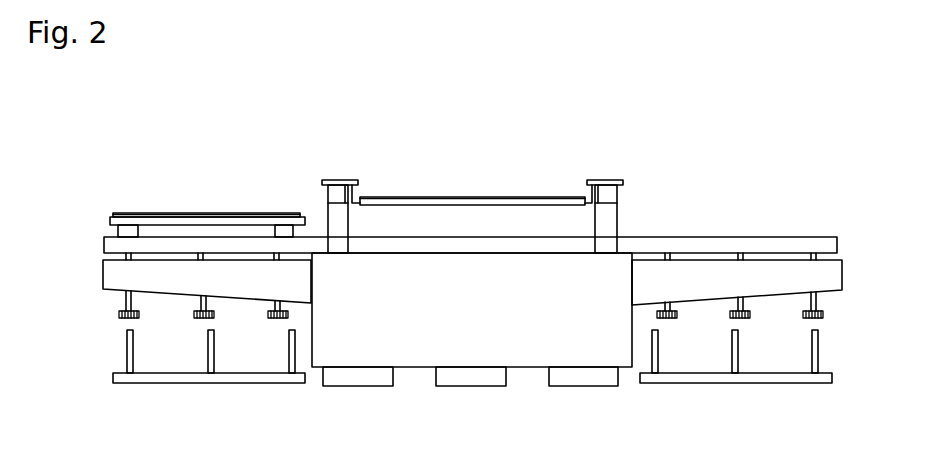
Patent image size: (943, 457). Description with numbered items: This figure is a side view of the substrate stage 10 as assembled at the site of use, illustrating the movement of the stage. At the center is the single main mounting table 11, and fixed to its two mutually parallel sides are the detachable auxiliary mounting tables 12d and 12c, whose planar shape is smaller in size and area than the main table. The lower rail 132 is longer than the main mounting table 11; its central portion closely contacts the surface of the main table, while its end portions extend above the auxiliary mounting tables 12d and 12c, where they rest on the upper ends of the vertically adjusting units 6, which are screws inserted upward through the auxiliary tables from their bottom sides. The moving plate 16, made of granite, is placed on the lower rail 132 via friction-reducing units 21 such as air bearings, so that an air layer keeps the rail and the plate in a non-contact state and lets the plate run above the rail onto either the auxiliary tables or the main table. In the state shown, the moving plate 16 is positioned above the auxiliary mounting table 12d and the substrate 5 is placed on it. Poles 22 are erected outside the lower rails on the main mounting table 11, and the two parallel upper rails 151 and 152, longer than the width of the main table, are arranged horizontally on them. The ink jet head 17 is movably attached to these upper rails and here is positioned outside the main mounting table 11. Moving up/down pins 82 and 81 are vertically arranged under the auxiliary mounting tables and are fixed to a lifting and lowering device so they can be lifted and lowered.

The substrate stage 10 is at (70, 121).
The upper rail 151 is at (330, 0).
The upper rail 152 is at (600, 0).
The pole 22 is at (326, 219).
The ink jet head 17 is at (455, 197).
The substrate 5 is at (113, 213).
The moving plate 16 is at (110, 219).
The friction-reducing unit 21 is at (106, 237).
The lower rail 132 is at (717, 199).
The auxiliary mounting table 12d is at (173, 292).
The auxiliary mounting table 12c is at (705, 290).
The vertically adjusting unit 6 is at (126, 297).
The moving up/down pin 82 is at (127, 352).
The moving up/down pin 81 is at (812, 352).
The main mounting table 11 is at (416, 363).